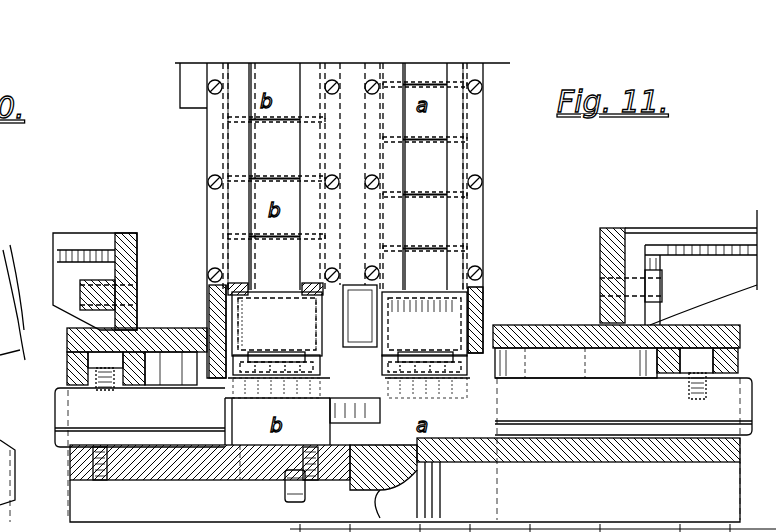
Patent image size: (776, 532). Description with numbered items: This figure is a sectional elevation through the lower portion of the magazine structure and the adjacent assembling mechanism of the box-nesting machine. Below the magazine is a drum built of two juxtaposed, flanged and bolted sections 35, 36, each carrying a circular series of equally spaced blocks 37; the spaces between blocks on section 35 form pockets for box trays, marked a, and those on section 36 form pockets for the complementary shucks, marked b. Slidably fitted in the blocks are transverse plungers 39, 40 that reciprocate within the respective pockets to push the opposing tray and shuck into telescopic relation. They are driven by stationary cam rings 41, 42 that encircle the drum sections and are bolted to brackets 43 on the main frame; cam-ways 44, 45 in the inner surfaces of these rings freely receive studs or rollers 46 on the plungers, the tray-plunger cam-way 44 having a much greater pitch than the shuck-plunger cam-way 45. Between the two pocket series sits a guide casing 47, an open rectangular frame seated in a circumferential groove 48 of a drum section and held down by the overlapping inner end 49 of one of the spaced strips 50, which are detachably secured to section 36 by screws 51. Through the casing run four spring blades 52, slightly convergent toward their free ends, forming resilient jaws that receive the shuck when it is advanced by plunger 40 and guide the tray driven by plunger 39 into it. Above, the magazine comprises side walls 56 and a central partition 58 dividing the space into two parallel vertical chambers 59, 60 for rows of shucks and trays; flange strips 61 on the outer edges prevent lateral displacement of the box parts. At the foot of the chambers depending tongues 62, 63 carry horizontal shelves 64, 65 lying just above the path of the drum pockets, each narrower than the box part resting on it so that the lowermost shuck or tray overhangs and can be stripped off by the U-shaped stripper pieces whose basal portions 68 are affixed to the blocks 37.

The drum section 35 is at (590, 462).
The drum section 36 is at (157, 480).
The blocks 37 is at (538, 320).
The tray plunger 39 is at (623, 449).
The shuck plunger 40 is at (140, 454).
The cam ring 41 is at (617, 228).
The cam ring 42 is at (115, 258).
The brackets 43 is at (68, 233).
The tray-plunger cam-way 44 is at (700, 346).
The shuck-plunger cam-way 45 is at (120, 352).
The studs or rollers 46 is at (104, 376).
The casing 47 is at (395, 492).
The circumferential groove 48 is at (440, 462).
The inner ends of strips 49 is at (284, 480).
The strips 50 is at (250, 458).
The screws 51 is at (100, 482).
The spring blades 52 is at (355, 410).
The side walls 56 is at (212, 160).
The central partition 58 is at (350, 70).
The shuck chamber 59 is at (250, 195).
The tray chamber 60 is at (442, 218).
The flange strips 61 is at (205, 103).
The depending tongue 62 is at (235, 312).
The depending tongue 63 is at (478, 273).
The shelf 64 is at (290, 352).
The shelf 65 is at (486, 303).
The basal portions 68 is at (305, 360).